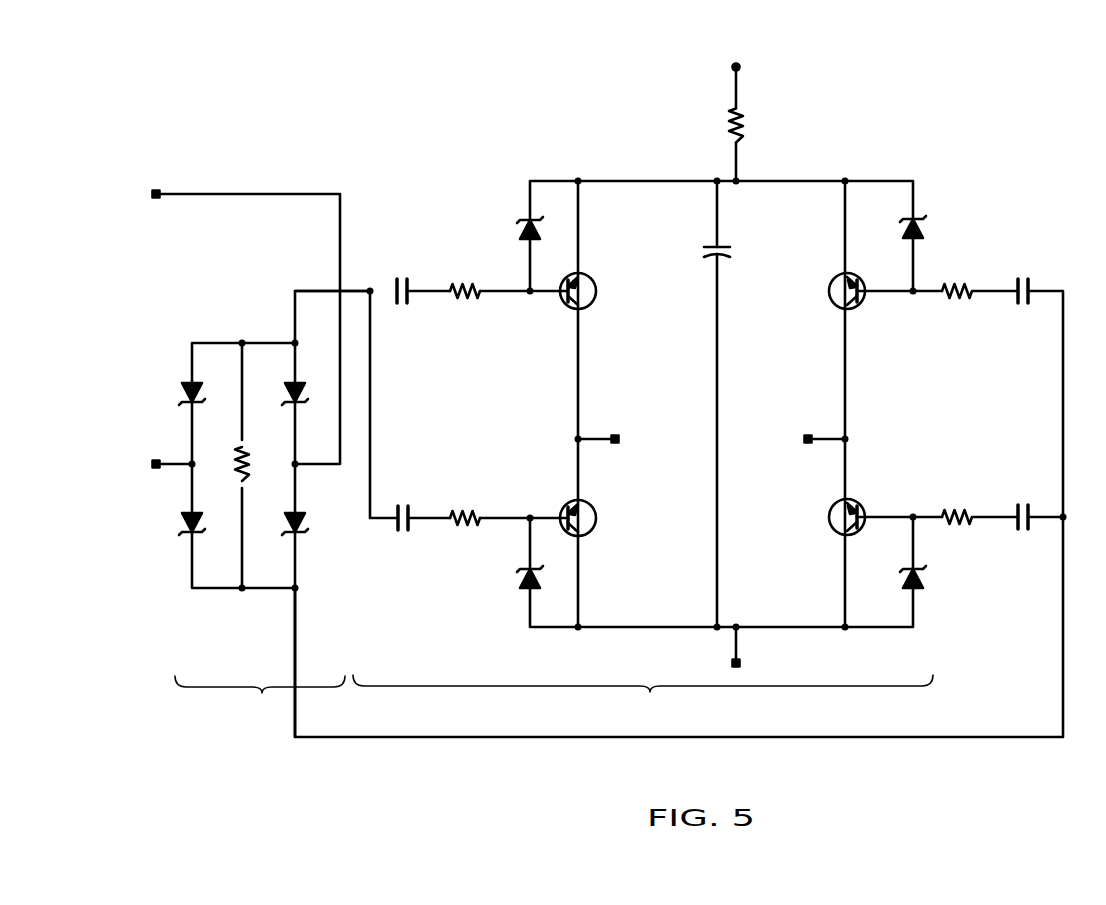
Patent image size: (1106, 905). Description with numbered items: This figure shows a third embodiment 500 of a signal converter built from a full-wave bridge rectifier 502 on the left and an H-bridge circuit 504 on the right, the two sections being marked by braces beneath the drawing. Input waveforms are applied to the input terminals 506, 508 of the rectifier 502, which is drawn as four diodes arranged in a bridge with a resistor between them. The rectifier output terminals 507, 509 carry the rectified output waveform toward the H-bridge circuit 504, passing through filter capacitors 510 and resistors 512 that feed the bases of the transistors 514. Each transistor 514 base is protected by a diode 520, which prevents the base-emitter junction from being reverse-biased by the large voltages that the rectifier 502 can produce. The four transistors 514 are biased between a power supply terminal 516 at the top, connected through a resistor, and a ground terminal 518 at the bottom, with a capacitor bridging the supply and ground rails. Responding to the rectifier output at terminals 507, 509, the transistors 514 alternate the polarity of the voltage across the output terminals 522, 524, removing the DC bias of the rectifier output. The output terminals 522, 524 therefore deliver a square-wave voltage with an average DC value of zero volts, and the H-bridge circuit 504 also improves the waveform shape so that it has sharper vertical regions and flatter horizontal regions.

The third embodiment of the signal converter 500 is at (486, 108).
The full-wave bridge rectifier 502 is at (260, 554).
The H-bridge circuit 504 is at (643, 700).
The input terminal 506 is at (178, 194).
The output terminal of the full-wave bridge rectifier 507 is at (310, 291).
The input terminal 508 is at (172, 464).
The output terminal of the full-wave bridge rectifier 509 is at (296, 605).
The filter capacitor 510 is at (396, 285).
The resistor 512 is at (463, 286).
The transistor 514 is at (595, 283).
The power supply terminal 516 is at (740, 114).
The ground terminal 518 is at (739, 650).
The diode 520 is at (522, 232).
The output terminal 522 is at (606, 436).
The output terminal 524 is at (826, 436).